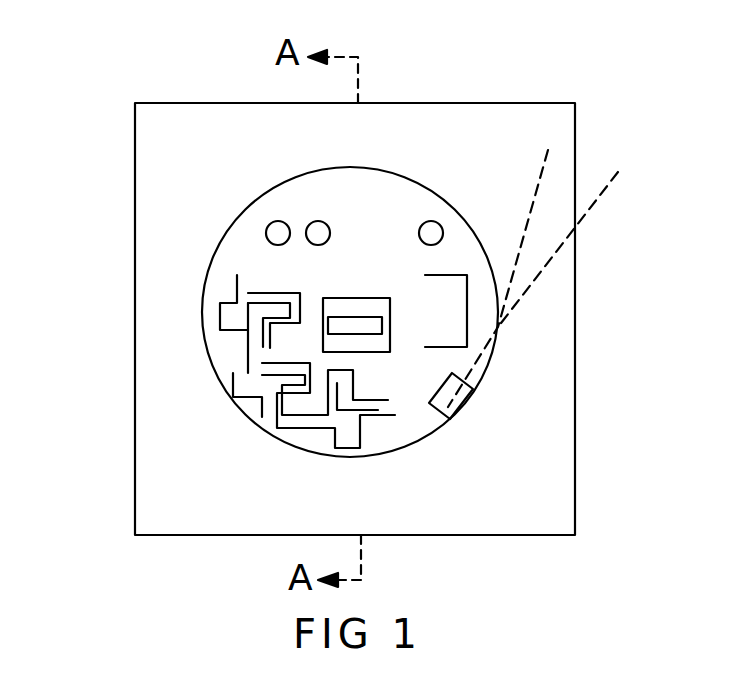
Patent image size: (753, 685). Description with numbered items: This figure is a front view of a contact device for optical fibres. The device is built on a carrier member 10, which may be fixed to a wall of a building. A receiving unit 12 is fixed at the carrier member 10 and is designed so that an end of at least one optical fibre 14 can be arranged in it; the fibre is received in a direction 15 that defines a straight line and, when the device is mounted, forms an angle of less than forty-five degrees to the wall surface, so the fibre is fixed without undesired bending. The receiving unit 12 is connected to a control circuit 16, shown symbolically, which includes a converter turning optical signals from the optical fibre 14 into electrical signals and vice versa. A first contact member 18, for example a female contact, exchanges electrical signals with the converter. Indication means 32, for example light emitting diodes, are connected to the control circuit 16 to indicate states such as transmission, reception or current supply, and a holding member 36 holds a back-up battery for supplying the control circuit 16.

The carrier member 10 is at (153, 171).
The receiving unit 12 is at (467, 407).
The optical fibre 14 is at (545, 172).
The direction 15 is at (600, 197).
The control circuit 16 is at (265, 370).
The first contact member 18 is at (370, 307).
The indication means 32 is at (278, 221).
The holding member 36 is at (453, 275).